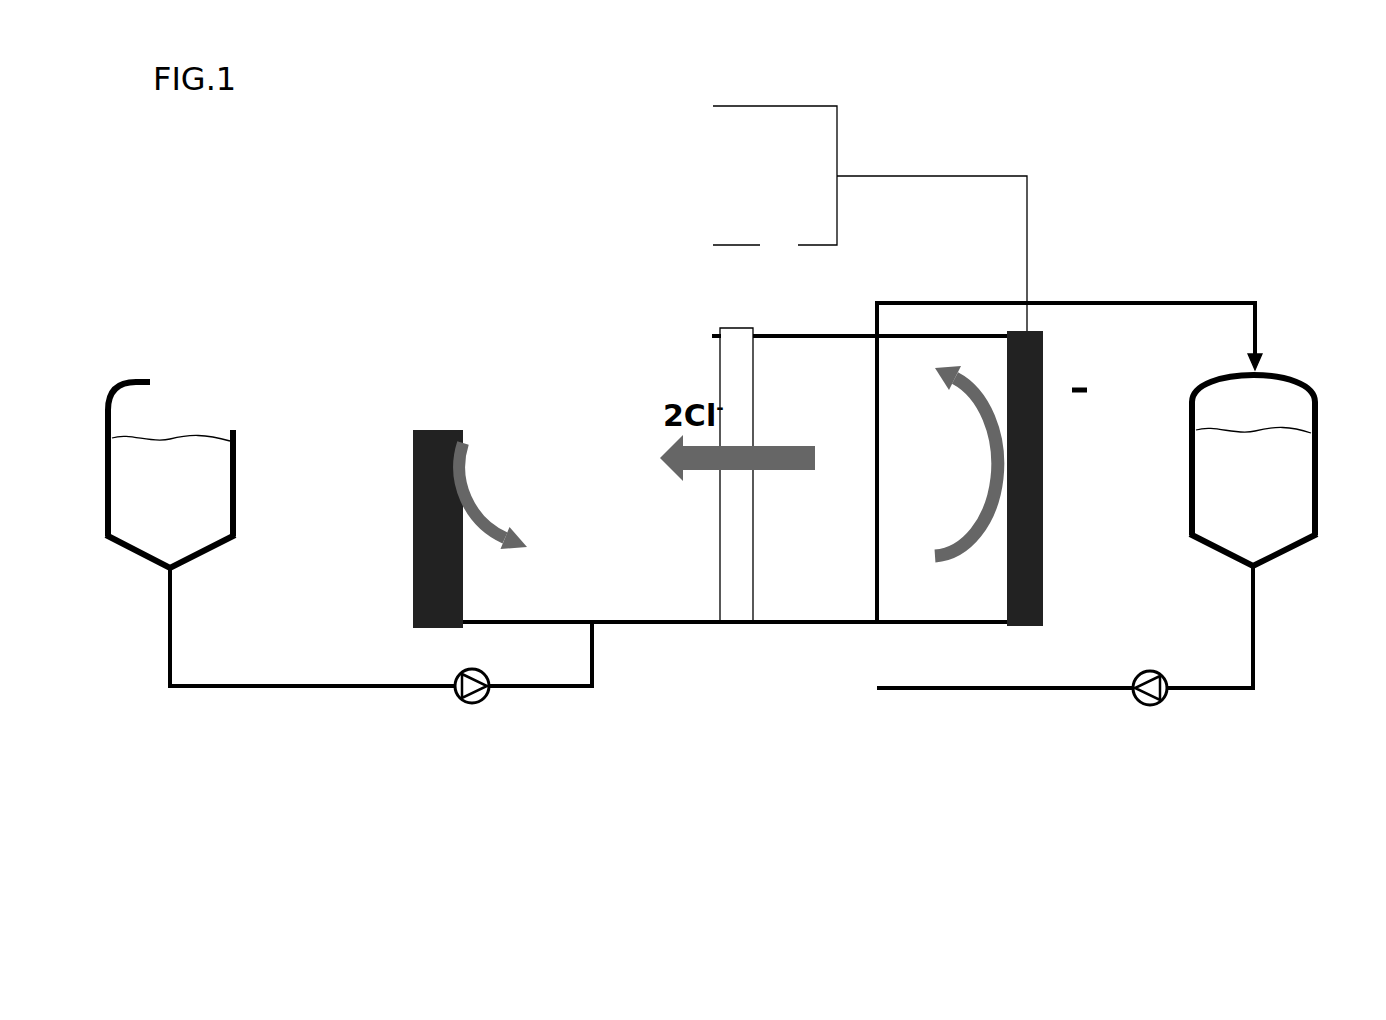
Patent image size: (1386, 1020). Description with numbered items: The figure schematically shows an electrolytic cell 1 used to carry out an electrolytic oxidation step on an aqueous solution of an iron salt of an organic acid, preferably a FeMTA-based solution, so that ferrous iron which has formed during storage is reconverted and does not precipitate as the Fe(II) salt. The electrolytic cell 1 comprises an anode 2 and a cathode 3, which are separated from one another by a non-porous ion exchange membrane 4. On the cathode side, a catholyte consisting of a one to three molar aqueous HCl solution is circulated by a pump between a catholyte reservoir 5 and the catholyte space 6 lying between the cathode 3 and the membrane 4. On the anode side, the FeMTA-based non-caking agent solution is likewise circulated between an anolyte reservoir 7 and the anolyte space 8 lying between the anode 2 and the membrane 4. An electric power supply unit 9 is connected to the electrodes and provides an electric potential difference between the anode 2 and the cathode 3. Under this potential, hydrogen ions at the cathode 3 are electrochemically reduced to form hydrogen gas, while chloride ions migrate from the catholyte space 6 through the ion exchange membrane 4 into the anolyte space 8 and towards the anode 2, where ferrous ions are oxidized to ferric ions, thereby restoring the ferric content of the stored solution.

The electrolytic cell 1 is at (758, 671).
The anode 2 is at (418, 618).
The cathode 3 is at (1015, 618).
The non-porous ion exchange membrane 4 is at (725, 601).
The catholyte reservoir 5 is at (1312, 460).
The catholyte space 6 is at (828, 638).
The anolyte reservoir 7 is at (122, 392).
The anolyte space 8 is at (607, 630).
The electric power supply unit 9 is at (817, 130).